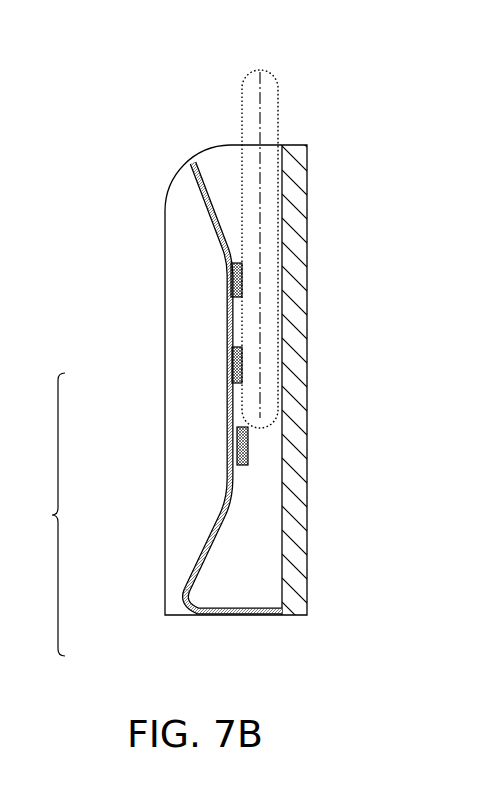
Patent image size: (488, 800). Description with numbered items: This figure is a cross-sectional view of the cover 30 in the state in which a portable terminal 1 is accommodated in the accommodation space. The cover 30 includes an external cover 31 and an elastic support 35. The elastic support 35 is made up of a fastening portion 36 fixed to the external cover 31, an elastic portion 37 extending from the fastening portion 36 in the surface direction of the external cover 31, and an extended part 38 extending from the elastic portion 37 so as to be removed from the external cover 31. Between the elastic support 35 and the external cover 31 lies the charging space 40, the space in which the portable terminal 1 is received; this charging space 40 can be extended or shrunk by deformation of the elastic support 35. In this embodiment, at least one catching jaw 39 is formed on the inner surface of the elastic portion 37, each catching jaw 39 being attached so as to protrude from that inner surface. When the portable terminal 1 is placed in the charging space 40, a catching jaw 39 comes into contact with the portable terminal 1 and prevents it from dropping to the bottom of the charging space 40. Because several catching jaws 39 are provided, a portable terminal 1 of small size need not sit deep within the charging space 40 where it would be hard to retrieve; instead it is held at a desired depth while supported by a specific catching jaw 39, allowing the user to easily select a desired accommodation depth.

The cover 30 is at (245, 27).
The portable terminal 1 is at (278, 85).
The external cover 31 is at (282, 199).
The charging space 40 is at (273, 303).
The catching jaw 39 is at (242, 365).
The extended part 38 is at (215, 232).
The elastic portion 37 is at (230, 406).
The fastening portion 36 is at (222, 616).
The elastic support 35 is at (40, 514).